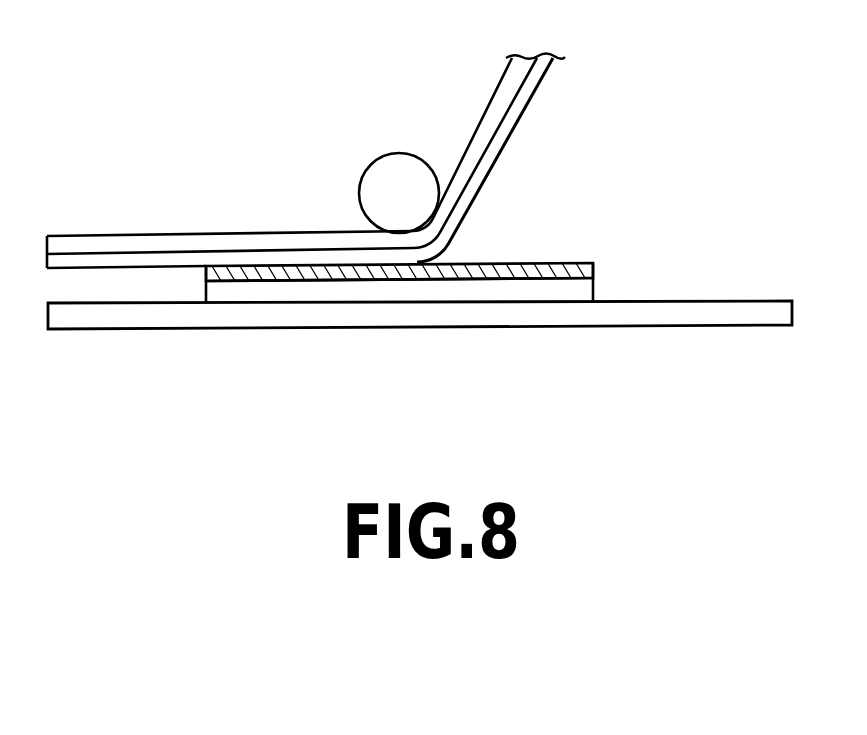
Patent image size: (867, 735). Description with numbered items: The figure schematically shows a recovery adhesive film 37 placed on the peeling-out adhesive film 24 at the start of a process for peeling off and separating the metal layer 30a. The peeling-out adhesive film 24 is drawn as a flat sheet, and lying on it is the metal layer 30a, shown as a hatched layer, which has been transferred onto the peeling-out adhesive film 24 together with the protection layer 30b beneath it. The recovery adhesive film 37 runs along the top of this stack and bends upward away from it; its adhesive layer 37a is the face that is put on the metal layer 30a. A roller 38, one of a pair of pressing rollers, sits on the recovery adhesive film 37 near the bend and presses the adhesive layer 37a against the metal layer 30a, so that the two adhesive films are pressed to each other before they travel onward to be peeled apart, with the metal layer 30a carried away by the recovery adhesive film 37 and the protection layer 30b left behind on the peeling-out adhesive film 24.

The peeling-out adhesive film 24 is at (442, 328).
The metal layer 30a is at (545, 263).
The protection layer 30b is at (570, 290).
The recovery adhesive film 37 is at (360, 136).
The adhesive layer 37a is at (484, 119).
The roller 38 is at (383, 177).